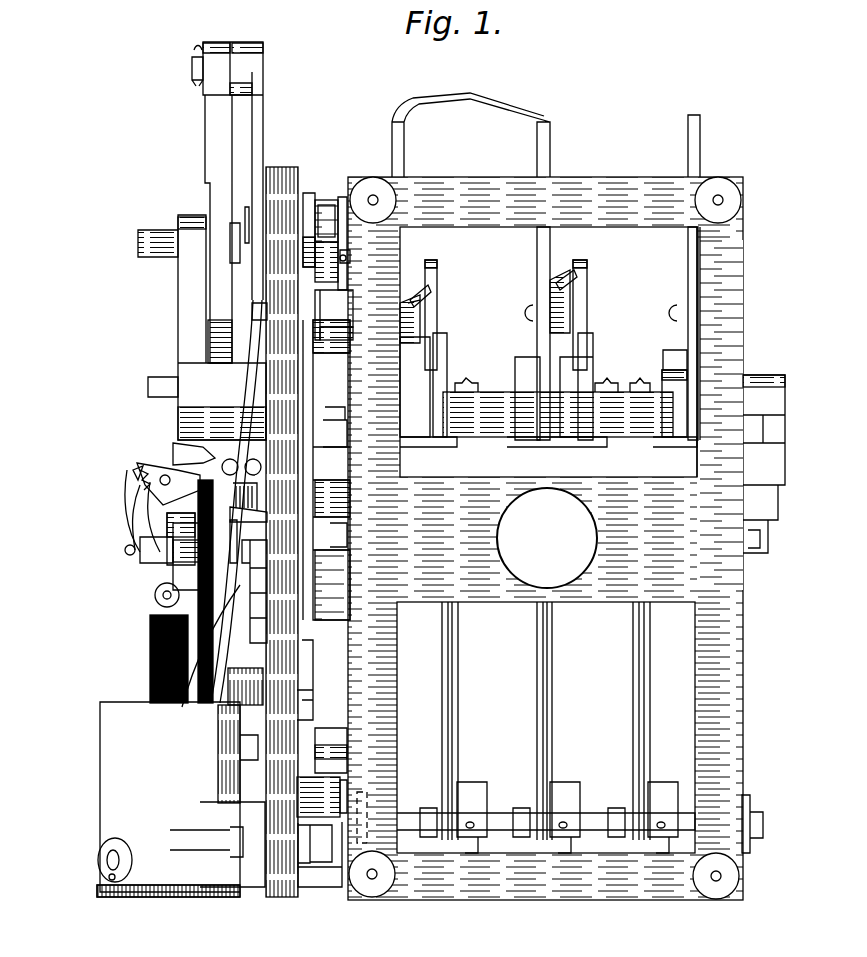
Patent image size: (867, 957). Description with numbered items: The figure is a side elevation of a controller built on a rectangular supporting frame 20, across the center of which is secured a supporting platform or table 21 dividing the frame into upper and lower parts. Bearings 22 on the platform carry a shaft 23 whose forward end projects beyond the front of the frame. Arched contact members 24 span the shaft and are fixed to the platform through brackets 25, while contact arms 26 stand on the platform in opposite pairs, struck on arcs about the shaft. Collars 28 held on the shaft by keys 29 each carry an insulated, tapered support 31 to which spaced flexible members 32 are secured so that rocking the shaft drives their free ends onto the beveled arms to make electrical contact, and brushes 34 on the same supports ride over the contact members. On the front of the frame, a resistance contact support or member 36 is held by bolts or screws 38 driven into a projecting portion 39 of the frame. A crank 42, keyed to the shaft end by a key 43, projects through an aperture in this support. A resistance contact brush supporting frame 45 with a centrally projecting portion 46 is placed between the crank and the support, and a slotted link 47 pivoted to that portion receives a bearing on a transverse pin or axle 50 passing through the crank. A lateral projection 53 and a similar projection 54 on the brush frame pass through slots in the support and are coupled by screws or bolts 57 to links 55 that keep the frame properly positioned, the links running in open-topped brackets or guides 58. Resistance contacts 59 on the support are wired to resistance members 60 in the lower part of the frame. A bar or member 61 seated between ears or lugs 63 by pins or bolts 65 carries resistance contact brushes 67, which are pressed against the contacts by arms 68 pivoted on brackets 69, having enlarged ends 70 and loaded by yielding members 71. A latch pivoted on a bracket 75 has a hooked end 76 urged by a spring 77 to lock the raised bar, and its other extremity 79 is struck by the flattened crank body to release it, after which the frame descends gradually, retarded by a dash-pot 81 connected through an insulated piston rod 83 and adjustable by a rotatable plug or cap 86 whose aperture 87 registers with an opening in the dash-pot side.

The supporting frame 20 is at (600, 182).
The supporting platform or table 21 is at (548, 459).
The bearings 22 is at (763, 388).
The shaft 23 is at (558, 414).
The contact members 24 is at (440, 335).
The brackets 25 is at (440, 370).
The contact arms 26 is at (690, 282).
The collars 28 is at (665, 380).
The keys 29 is at (462, 383).
The support 31 is at (404, 303).
The flexible members 32 is at (700, 98).
The flexible members or brushes 34 is at (428, 292).
The resistance contact support or member 36 is at (286, 168).
The bolts or screws 38 is at (252, 313).
The projecting portion 39 is at (346, 307).
The crank 42 is at (178, 312).
The key 43 is at (150, 390).
The resistance contact brush supporting frame 45 is at (236, 408).
The centrally projecting portion 46 is at (258, 118).
The link 47 is at (222, 134).
The transverse pin or axle 50 is at (160, 258).
The lateral projection 53 is at (247, 218).
The projection 54 is at (215, 777).
The links 55 is at (318, 200).
The screws or bolts 57 is at (350, 262).
The brackets or guides 58 is at (365, 132).
The resistance contacts 59 is at (256, 635).
The resistance members 60 is at (455, 739).
The bar or member 61 is at (165, 567).
The projecting ears or lugs 63 is at (180, 582).
The pin or bolt 65 is at (145, 522).
The resistance contact brushes 67 is at (140, 557).
The arms 68 is at (133, 514).
The brackets 69 is at (168, 480).
The enlarged free end 70 is at (127, 552).
The yielding members 71 is at (140, 484).
The bracket 75 is at (260, 462).
The end of the latch 76 is at (260, 520).
The yielding member 77 is at (258, 497).
The projecting extremity of the latch 79 is at (178, 460).
The dash-pot 81 is at (105, 740).
The insulated piston rod 83 is at (150, 672).
The rotatively mounted plug or cap 86 is at (105, 852).
The aperture 87 is at (100, 887).